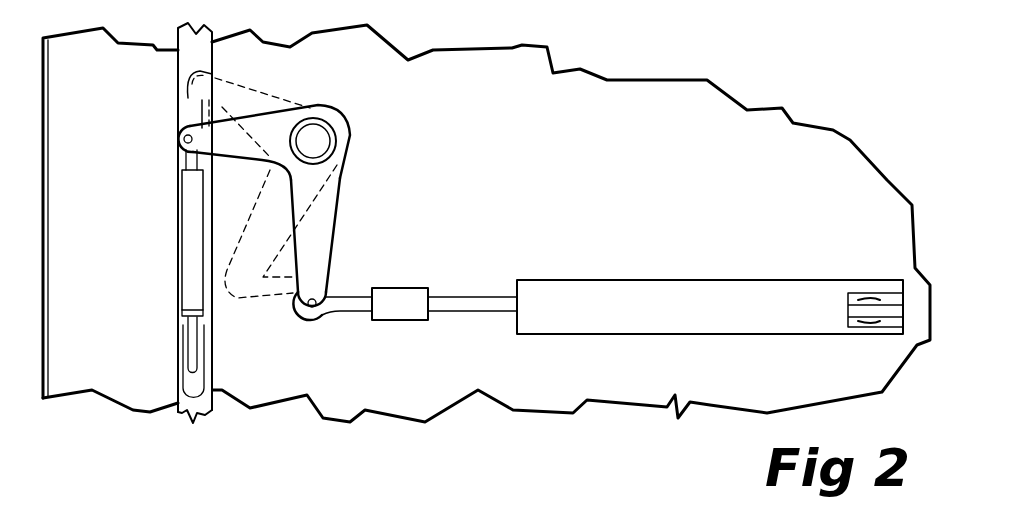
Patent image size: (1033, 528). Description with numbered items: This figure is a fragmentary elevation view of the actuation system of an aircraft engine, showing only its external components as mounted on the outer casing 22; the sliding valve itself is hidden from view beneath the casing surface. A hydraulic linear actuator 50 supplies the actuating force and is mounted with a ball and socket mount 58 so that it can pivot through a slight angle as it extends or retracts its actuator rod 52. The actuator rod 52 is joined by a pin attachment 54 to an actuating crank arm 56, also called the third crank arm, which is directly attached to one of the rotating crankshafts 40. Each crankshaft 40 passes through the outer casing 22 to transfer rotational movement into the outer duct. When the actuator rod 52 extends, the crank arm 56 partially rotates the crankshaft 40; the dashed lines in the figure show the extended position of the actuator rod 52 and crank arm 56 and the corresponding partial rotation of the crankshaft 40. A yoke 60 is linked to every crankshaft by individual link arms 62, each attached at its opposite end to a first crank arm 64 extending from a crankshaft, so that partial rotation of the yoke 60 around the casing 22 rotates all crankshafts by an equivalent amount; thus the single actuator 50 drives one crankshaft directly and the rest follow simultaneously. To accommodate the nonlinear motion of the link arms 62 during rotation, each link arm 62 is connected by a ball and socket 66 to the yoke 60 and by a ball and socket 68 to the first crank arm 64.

The outer casing 22 is at (533, 207).
The rotating crankshaft 40 is at (350, 137).
The hydraulic linear actuator 50 is at (557, 278).
The actuator rod 52 is at (443, 290).
The pin attachment 54 is at (313, 321).
The actuating crank arm 56 is at (347, 192).
The ball and socket mount 58 is at (875, 305).
The yoke 60 is at (182, 88).
The link arm 62 is at (163, 223).
The first crank arm 64 is at (276, 188).
The ball and socket 66 is at (210, 358).
The ball and socket 68 is at (180, 140).